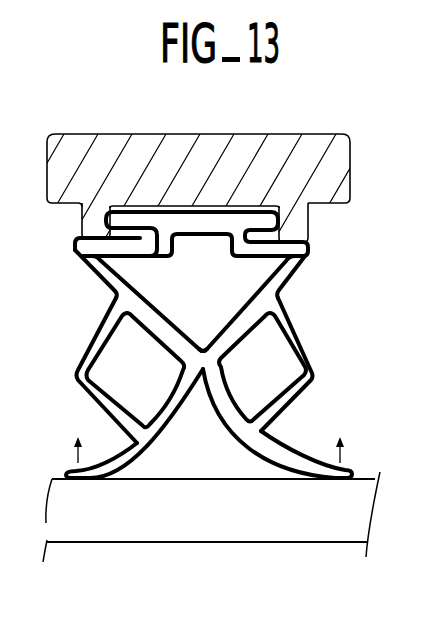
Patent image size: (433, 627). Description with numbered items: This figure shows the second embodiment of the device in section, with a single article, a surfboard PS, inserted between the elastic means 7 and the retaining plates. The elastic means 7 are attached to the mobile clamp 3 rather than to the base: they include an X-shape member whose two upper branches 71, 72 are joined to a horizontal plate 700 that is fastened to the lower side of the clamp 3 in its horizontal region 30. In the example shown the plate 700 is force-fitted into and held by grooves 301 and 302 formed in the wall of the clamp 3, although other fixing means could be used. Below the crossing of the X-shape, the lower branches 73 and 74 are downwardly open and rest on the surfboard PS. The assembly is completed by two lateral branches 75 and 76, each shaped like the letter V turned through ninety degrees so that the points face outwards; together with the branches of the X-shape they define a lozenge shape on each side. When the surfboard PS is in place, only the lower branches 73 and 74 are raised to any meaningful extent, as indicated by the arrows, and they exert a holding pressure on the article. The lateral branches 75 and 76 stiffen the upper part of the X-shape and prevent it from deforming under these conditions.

The mobile clamp 3 is at (108, 118).
The horizontal region 30 is at (222, 148).
The groove 301 is at (96, 228).
The groove 302 is at (308, 228).
The elastic means 7 is at (342, 318).
The horizontal plate 700 is at (210, 218).
The upper branch 71 is at (100, 277).
The upper branch 72 is at (284, 280).
The lower branch 73 is at (137, 460).
The lower branch 74 is at (285, 455).
The lateral branch 75 is at (100, 393).
The lateral branch 76 is at (314, 380).
The surfboard PS is at (81, 530).